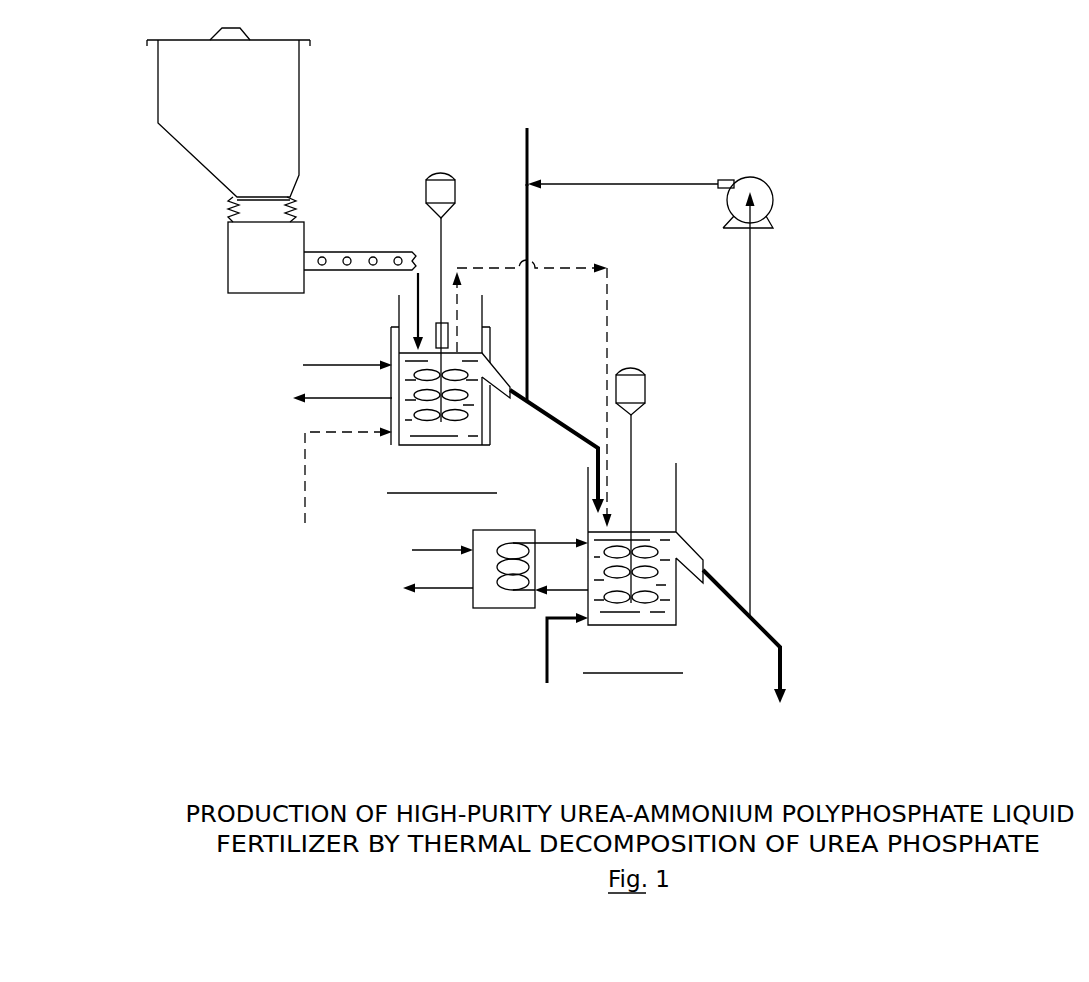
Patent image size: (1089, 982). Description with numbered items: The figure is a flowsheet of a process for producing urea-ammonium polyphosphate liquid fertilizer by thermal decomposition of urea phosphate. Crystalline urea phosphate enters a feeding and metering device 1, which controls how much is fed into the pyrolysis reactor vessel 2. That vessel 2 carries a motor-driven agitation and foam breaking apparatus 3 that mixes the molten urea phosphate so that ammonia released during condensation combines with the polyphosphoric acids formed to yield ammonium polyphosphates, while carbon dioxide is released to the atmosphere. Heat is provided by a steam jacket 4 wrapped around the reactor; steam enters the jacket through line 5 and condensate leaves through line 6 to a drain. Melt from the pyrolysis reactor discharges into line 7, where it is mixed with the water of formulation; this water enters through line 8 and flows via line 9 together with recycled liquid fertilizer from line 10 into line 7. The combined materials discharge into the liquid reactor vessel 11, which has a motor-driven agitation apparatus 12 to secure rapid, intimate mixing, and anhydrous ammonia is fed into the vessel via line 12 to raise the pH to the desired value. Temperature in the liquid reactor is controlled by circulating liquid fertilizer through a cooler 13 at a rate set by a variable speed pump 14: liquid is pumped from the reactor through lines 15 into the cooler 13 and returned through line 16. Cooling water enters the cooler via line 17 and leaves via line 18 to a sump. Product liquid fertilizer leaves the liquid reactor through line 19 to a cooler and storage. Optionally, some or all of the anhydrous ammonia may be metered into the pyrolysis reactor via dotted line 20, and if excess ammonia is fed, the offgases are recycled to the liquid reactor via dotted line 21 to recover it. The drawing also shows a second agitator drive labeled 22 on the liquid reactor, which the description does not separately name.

The feeding and metering device 1 is at (299, 99).
The pyrolysis reactor vessel 2 is at (399, 304).
The motor-driven agitation and foam breaking apparatus 3 is at (455, 184).
The steam jacket 4 is at (492, 422).
The line 5 is at (317, 362).
The line 6 is at (340, 395).
The line 7 is at (545, 401).
The line 8 is at (530, 145).
The line 9 is at (530, 214).
The line 10 is at (752, 421).
The liquid reactor vessel 11 is at (677, 487).
The motor-driven agitation apparatus 12 is at (546, 666).
The cooler 13 is at (487, 529).
The variable speed pump 14 is at (566, 592).
The lines 15 is at (545, 582).
The line 16 is at (547, 536).
The line 17 is at (423, 548).
The line 18 is at (433, 589).
The line 19 is at (775, 641).
The dotted line 20 is at (303, 478).
The dotted line 21 is at (608, 279).
The agitator motor 22 is at (636, 424).